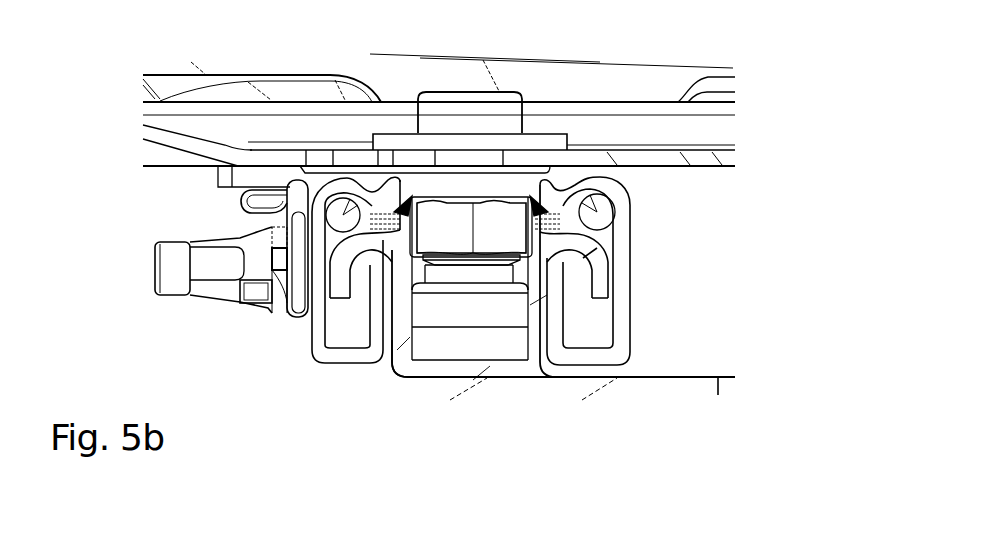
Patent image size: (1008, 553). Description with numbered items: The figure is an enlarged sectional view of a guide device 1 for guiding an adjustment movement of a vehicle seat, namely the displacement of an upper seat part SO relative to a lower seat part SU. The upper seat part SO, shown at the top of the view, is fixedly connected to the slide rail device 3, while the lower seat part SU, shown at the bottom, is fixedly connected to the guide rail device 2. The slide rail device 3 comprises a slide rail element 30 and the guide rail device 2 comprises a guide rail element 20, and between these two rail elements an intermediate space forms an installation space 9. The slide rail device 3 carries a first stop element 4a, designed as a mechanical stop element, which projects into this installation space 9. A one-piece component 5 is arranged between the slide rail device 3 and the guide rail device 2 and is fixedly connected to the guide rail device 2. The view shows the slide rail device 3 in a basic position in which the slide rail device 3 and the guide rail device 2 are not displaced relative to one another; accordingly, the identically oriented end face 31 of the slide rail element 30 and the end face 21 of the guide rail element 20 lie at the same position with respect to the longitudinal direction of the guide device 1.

The guide device 1 is at (739, 282).
The guide rail device 2 is at (473, 433).
The slide rail device 3 is at (680, 207).
The stop element 4a is at (507, 222).
The component 5 is at (506, 271).
The installation space 9 is at (420, 273).
The guide rail element 20 is at (518, 363).
The end face 21 is at (433, 368).
The slide rail element 30 is at (627, 236).
The end face 31 is at (619, 343).
The upper part SO is at (745, 97).
The lower part SU is at (737, 400).